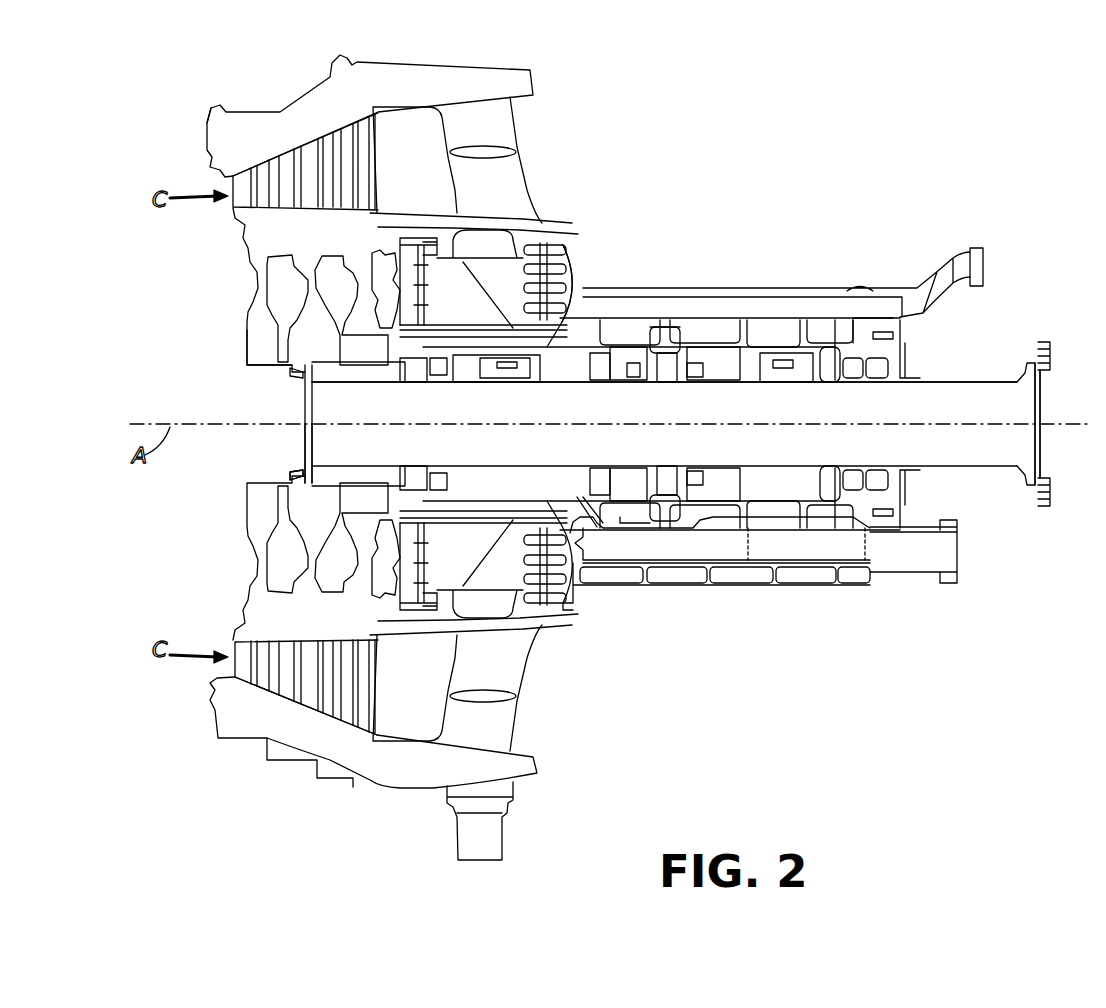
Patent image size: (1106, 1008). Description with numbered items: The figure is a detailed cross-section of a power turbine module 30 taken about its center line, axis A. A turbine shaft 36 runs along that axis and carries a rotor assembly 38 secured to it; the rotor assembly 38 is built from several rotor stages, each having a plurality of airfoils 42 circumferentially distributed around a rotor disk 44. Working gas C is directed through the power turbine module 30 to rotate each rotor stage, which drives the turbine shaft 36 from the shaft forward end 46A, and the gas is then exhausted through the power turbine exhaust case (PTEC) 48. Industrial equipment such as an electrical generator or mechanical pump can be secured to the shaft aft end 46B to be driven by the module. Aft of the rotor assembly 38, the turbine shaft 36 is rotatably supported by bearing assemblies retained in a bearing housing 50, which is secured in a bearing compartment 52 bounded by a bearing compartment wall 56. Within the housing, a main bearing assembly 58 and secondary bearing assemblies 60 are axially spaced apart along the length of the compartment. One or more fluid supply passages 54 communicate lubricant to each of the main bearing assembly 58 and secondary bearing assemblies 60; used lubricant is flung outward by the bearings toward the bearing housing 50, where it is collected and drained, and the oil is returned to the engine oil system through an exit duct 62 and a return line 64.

The power turbine module 30 is at (845, 136).
The turbine shaft 36 is at (198, 413).
The rotor assembly 38 is at (222, 296).
The airfoils 42 is at (332, 230).
The rotor disks 44 is at (358, 500).
The shaft forward end 46A is at (258, 447).
The shaft aft end 46B is at (1048, 408).
The power turbine exhaust case (PTEC) 48 is at (538, 138).
The bearing housing 50 is at (729, 343).
The bearing compartment 52 is at (853, 263).
The fluid supply passages 54 is at (568, 340).
The bearing compartment wall 56 is at (775, 285).
The main bearing assembly 58 is at (640, 380).
The secondary bearing assemblies 60 is at (510, 383).
The exit duct 62 is at (716, 553).
The return line 64 is at (913, 551).